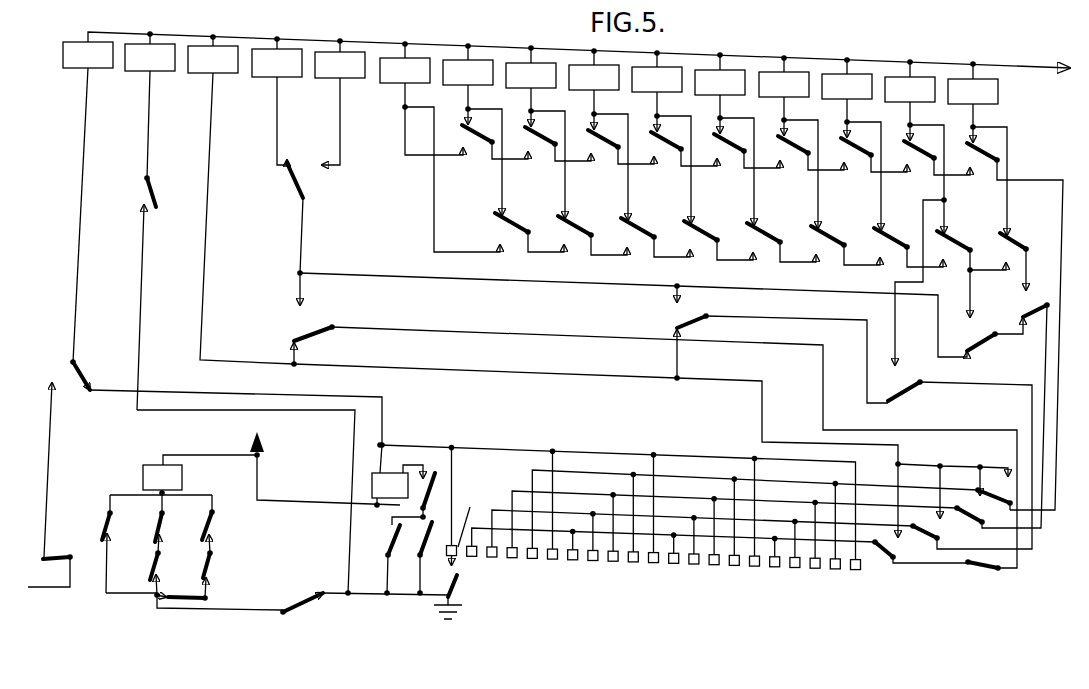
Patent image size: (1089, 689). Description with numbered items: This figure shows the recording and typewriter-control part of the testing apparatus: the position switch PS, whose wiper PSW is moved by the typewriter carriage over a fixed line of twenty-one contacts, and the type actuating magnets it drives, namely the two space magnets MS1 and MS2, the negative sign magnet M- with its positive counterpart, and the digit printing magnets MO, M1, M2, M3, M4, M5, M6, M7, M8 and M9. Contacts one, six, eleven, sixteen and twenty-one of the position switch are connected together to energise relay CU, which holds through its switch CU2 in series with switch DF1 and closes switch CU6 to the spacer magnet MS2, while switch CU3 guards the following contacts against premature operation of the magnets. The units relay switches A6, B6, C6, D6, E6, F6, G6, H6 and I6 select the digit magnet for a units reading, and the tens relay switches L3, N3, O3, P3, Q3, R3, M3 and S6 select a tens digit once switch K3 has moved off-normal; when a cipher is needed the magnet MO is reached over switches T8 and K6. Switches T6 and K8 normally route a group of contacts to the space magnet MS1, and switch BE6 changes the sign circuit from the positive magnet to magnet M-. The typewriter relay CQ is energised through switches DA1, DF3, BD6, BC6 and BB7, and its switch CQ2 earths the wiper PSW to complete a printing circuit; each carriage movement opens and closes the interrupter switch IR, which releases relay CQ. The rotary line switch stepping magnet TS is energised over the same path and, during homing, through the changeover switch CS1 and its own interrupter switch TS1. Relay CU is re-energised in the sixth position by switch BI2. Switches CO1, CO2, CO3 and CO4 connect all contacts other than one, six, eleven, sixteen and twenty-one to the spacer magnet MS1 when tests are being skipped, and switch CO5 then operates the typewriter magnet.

The rotary line switch stepping magnet TS is at (199, 204).
The spacer magnet MS2 is at (150, 106).
The space magnet MS1 is at (543, 287).
The negative sign magnet M- is at (340, 103).
The digit printing magnet M9 is at (440, 148).
The digit printing magnet M8 is at (468, 77).
The digit printing magnet M7 is at (531, 79).
The digit printing magnet M6 is at (594, 82).
The digit printing magnet M5 is at (657, 84).
The digit printing magnet M4 is at (720, 86).
The digit printing magnet M3 is at (851, 162).
The digit printing magnet M2 is at (847, 91).
The digit printing magnet M1 is at (910, 93).
The cipher digit printing magnet MO is at (973, 95).
The units relay switch I6 is at (485, 160).
The units relay switch H6 is at (548, 163).
The units relay switch G6 is at (611, 165).
The units relay switch F6 is at (675, 168).
The units relay switch E6 is at (738, 170).
The units relay switch D6 is at (801, 172).
The units relay switch C6 is at (864, 174).
The units relay switch B6 is at (927, 177).
The units relay switch A6 is at (1004, 317).
The tens relay switch S6 is at (520, 232).
The tens relay switch R3 is at (583, 235).
The tens relay switch Q3 is at (645, 237).
The tens relay switch P3 is at (709, 240).
The tens relay switch O3 is at (771, 242).
The tens relay switch N3 is at (836, 245).
The tens relay switch L3 is at (950, 281).
The tens relay switch K6 is at (1023, 256).
The relay CU switch CU6 is at (246, 383).
The sign changeover switch BE6 is at (627, 260).
The tens relay switch K8 is at (773, 343).
The hundred relay switch T6 is at (954, 460).
The tens relay switch K3 is at (995, 340).
The hundred relay switch T8 is at (1016, 411).
The relay CU switch CU3 is at (674, 459).
The changeover switch CS1 is at (227, 411).
The interrupter switch TS1 is at (58, 485).
The typewriter relay CQ is at (255, 472).
The relay CO switch CO5 is at (112, 544).
The relay DA switch DA1 is at (143, 529).
The relay DF switch DF3 is at (198, 580).
The relay BD switch BD6 is at (231, 524).
The relay BC switch BC6 is at (229, 575).
The relay BB switch BB7 is at (207, 595).
The interrupter switch IR is at (364, 608).
The relay CU is at (390, 475).
The relay CU holding switch CU2 is at (424, 485).
The relay DF switch DF1 is at (376, 559).
The relay BI switch BI2 is at (413, 557).
The position switch wiper PSW is at (481, 514).
The relay CQ switch CQ2 is at (468, 587).
The position switch PS is at (620, 577).
The relay CO switch CO1 is at (928, 520).
The relay CO switch CO2 is at (916, 539).
The relay CO switch CO3 is at (960, 519).
The relay CO switch CO4 is at (988, 501).